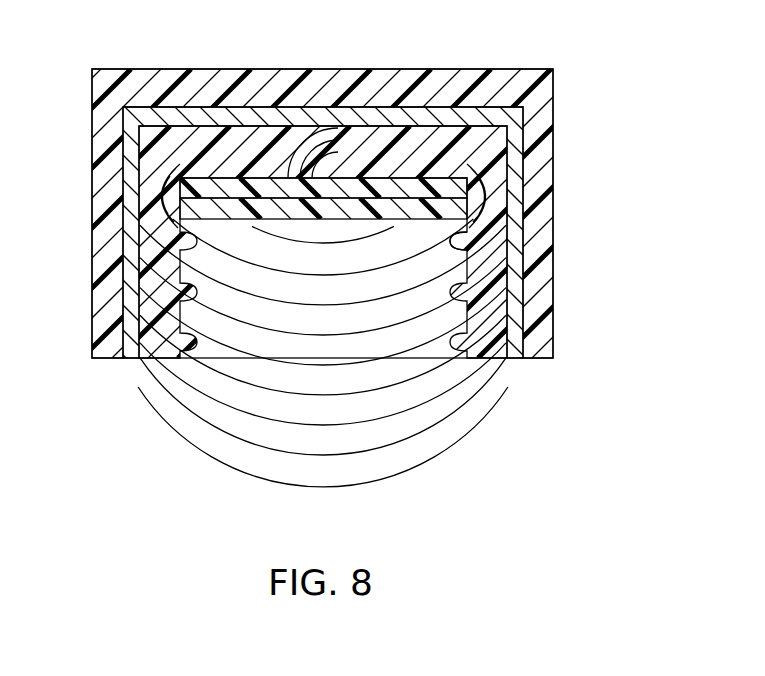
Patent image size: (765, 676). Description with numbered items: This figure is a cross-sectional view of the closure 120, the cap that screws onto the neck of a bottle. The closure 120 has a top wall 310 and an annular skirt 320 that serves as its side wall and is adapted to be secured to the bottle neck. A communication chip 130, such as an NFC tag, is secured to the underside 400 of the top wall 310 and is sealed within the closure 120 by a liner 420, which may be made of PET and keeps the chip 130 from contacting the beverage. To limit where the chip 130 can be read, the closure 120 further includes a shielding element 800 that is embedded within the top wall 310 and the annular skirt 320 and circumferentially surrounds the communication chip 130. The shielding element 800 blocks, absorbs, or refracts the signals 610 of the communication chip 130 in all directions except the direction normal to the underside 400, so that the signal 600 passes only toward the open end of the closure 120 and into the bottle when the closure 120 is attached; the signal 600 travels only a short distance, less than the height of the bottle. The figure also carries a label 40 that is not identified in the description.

The closure 120 is at (584, 258).
The shielding element 800 is at (213, 123).
The annular skirt 320 is at (541, 121).
The top wall 310 is at (412, 118).
The underside 400 is at (380, 180).
The closure liner 420 is at (237, 222).
The communication chip 130 is at (436, 223).
The signals 610 is at (322, 130).
The lens 40 is at (203, 338).
The signal 600 is at (232, 470).